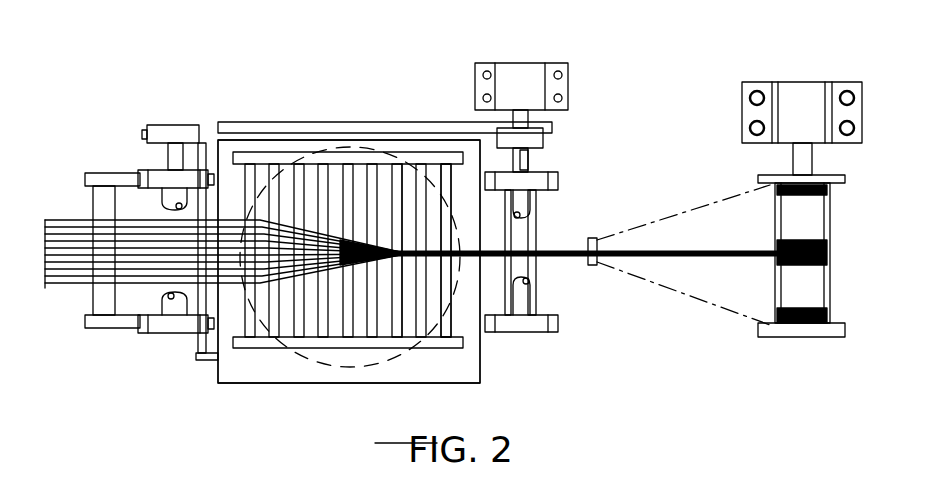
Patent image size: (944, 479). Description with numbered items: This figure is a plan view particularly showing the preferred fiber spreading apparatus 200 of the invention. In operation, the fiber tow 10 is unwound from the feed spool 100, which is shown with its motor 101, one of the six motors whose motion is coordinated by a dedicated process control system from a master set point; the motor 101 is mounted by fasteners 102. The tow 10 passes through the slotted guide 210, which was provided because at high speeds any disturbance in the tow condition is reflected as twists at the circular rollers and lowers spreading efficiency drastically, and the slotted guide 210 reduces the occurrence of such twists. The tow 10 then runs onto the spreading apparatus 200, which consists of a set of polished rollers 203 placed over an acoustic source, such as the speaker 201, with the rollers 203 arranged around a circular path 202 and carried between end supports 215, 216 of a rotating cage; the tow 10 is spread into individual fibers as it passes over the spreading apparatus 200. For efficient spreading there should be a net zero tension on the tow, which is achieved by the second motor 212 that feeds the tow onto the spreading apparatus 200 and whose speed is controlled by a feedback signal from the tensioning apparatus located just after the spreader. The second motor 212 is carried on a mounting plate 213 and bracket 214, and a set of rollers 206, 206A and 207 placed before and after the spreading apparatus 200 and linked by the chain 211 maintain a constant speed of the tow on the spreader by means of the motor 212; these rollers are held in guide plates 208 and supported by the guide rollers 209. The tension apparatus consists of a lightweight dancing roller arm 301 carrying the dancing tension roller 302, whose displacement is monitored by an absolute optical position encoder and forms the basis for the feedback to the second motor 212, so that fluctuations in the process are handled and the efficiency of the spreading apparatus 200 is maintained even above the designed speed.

The tow 10 is at (60, 222).
The feed spool 100 is at (858, 176).
The motor 101 is at (795, 100).
The motor mounting bolts 102 is at (750, 98).
The fiber spreading apparatus 200 is at (318, 76).
The speaker 201 is at (352, 360).
The rotation path of cage 202 is at (300, 385).
The polished rollers 203 is at (462, 330).
The roller 206 is at (523, 300).
The roller 206A is at (527, 164).
The roller 207 is at (210, 150).
The guide plate 208 is at (537, 178).
The guide roller 209 is at (152, 176).
The slotted guide 210 is at (592, 236).
The chain 211 is at (322, 130).
The second motor 212 is at (530, 82).
The motor mounting plate 213 is at (530, 160).
The support bracket 214 is at (172, 124).
The central cage bar 215 is at (402, 158).
The end cage bar 216 is at (440, 350).
The dancing roller arm 301 is at (118, 172).
The dancing tension roller 302 is at (97, 300).